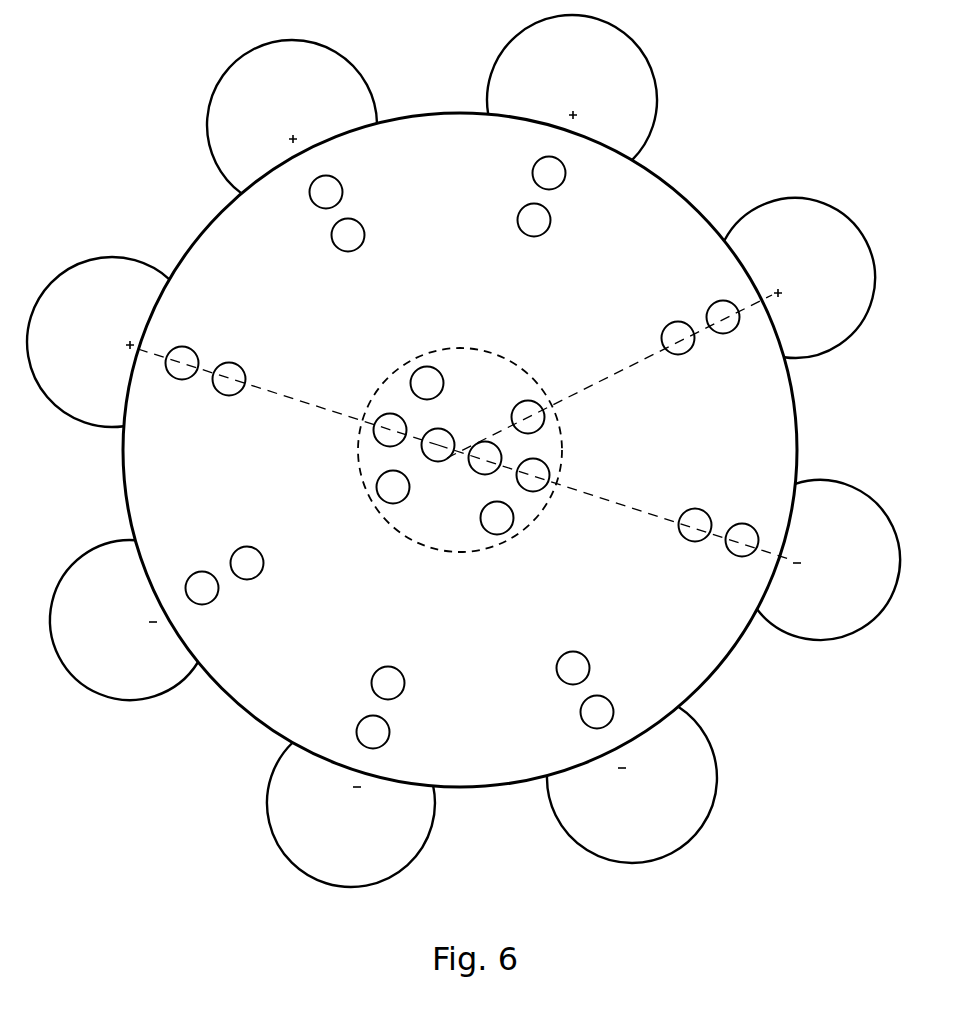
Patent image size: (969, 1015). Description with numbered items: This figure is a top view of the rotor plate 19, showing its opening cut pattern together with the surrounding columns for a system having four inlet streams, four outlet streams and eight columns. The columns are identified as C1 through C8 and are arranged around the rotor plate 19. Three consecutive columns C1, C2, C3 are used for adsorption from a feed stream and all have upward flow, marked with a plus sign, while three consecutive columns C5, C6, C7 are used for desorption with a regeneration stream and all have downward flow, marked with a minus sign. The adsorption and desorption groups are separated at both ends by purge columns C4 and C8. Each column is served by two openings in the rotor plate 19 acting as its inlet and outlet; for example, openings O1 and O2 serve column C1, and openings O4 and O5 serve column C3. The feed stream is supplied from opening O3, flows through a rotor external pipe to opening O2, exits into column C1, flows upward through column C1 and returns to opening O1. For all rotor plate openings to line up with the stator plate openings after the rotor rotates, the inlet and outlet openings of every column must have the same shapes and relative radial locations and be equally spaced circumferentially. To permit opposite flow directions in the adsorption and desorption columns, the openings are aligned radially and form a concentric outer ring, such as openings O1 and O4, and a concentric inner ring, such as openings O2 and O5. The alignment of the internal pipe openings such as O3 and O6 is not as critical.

The rotor plate 19 is at (798, 425).
The column C1 is at (799, 278).
The column C2 is at (572, 87).
The column C3 is at (292, 116).
The column C4 is at (98, 342).
The column C5 is at (124, 620).
The column C6 is at (351, 815).
The column C7 is at (632, 785).
The column C8 is at (828, 560).
The opening O1 is at (737, 327).
The opening O2 is at (681, 321).
The opening O3 is at (545, 420).
The opening O4 is at (308, 197).
The opening O5 is at (355, 220).
The opening O6 is at (411, 375).